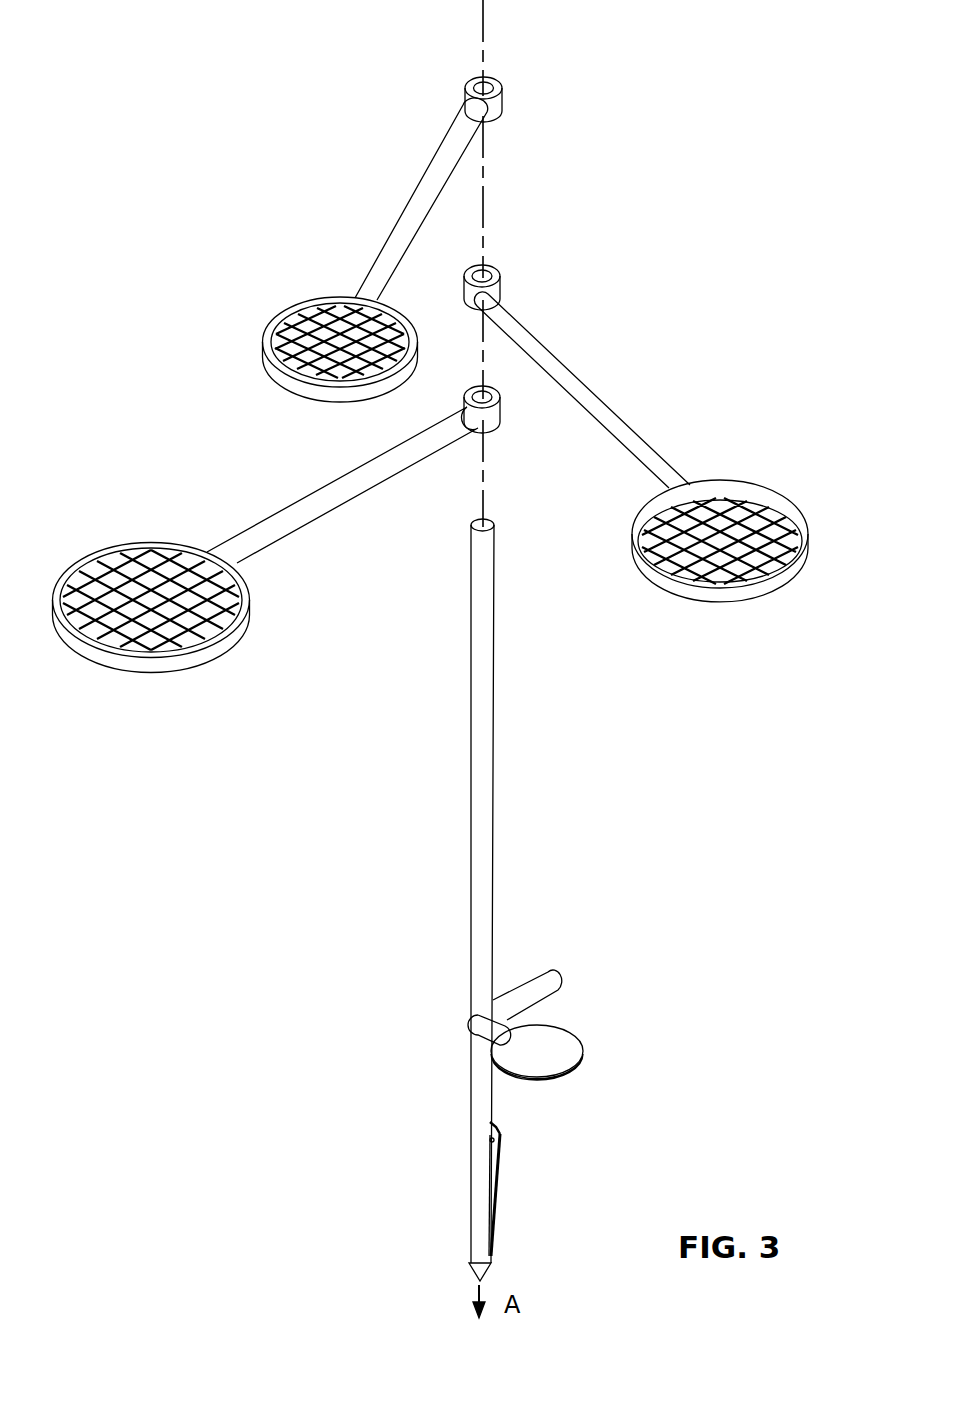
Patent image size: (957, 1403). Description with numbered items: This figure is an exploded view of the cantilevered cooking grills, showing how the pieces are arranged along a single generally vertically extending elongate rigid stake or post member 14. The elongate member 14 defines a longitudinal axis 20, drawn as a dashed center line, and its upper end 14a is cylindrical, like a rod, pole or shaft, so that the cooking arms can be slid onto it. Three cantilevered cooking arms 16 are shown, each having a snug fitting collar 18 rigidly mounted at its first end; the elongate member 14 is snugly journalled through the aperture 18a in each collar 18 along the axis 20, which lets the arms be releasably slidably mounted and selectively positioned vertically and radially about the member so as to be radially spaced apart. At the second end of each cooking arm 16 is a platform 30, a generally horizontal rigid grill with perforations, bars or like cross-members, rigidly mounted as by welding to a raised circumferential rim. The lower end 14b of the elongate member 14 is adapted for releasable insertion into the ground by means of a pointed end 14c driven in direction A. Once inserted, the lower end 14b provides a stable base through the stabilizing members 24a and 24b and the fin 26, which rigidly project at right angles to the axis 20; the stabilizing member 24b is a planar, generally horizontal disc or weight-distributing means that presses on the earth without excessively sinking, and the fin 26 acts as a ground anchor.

The elongate member 14 is at (507, 755).
The upper end of elongate member 14a is at (498, 586).
The lower end of elongate member 14b is at (505, 1180).
The pointed end 14c is at (490, 1271).
The cantilevered cooking arm 16 is at (423, 180).
The collar 18 is at (505, 98).
The aperture 18a is at (487, 82).
The longitudinal axis 20 is at (487, 10).
The stabilizing member 24a is at (550, 970).
The stabilizing member 24b is at (583, 1036).
The fin 26 is at (505, 1140).
The platform 30 is at (332, 320).